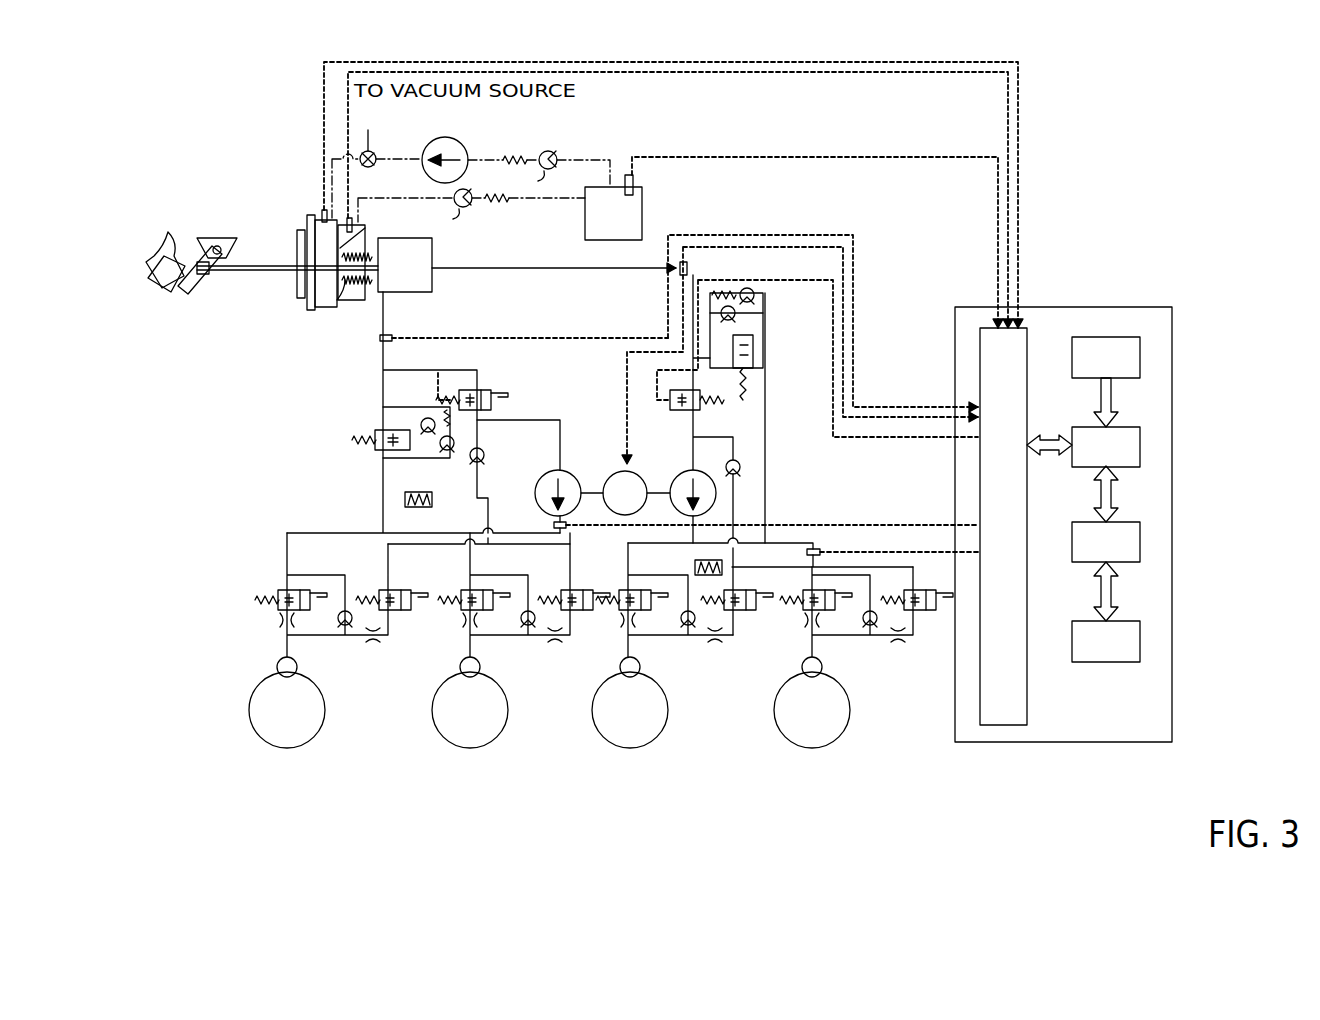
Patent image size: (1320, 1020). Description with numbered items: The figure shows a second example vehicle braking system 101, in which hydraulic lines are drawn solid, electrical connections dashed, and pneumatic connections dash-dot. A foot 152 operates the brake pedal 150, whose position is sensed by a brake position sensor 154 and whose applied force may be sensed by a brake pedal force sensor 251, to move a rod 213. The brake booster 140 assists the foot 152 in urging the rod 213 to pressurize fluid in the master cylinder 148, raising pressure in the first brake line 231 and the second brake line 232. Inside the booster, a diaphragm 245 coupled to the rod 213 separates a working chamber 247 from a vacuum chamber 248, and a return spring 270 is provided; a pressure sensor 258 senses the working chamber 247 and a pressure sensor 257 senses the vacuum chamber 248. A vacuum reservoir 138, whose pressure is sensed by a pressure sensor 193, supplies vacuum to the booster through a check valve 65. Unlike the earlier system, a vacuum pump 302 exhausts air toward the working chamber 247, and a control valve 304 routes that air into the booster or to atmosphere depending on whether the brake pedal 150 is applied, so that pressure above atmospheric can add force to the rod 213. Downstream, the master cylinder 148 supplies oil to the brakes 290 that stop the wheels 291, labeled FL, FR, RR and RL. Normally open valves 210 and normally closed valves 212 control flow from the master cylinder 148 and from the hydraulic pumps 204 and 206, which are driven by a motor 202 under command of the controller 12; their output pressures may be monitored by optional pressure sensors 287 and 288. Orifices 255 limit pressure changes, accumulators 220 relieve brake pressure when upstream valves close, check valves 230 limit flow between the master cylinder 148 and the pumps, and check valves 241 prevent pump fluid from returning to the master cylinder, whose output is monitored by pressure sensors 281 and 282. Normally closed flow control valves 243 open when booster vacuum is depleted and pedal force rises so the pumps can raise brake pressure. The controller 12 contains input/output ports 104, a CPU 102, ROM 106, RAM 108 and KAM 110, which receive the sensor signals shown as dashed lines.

The controller 12 is at (1172, 307).
The check valve 65 is at (470, 212).
The braking system 101 is at (1086, 75).
The CPU 102 is at (1140, 448).
The input/output ports 104 is at (1027, 330).
The ROM 106 is at (1140, 356).
The RAM 108 is at (1140, 540).
The KAM 110 is at (1140, 642).
The vacuum reservoir 138 is at (580, 234).
The brake booster 140 is at (306, 300).
The master cylinder 148 is at (400, 238).
The brake pedal 150 is at (201, 300).
The foot 152 is at (146, 266).
The brake position sensor 154 is at (240, 238).
The pressure sensor 193 is at (634, 185).
The motor 202 is at (622, 468).
The hydraulic pump 204 is at (578, 476).
The hydraulic pump 206 is at (678, 470).
The normally open valve 210 is at (278, 580).
The normally closed valve 212 is at (370, 576).
The rod 213 is at (272, 264).
The accumulator 220 is at (432, 500).
The check valve 230 is at (484, 460).
The first brake line 231 is at (382, 370).
The second brake line 232 is at (468, 270).
The check valve 241 is at (444, 454).
The normally closed flow control valve 243 is at (376, 444).
The diaphragm 245 is at (356, 232).
The working chamber 247 is at (322, 302).
The vacuum chamber 248 is at (346, 304).
The brake pedal force sensor 251 is at (184, 296).
The orifice 255 is at (374, 644).
The pressure sensor 257 is at (354, 215).
The pressure sensor 258 is at (320, 206).
The return spring 270 is at (356, 292).
The pressure sensor 281 is at (398, 334).
The pressure sensor 282 is at (694, 262).
The pressure sensor 287 is at (564, 530).
The pressure sensor 288 is at (807, 552).
The brake 290 is at (280, 662).
The wheel 291 is at (258, 737).
The vacuum pump 302 is at (452, 138).
The control valve 304 is at (374, 152).